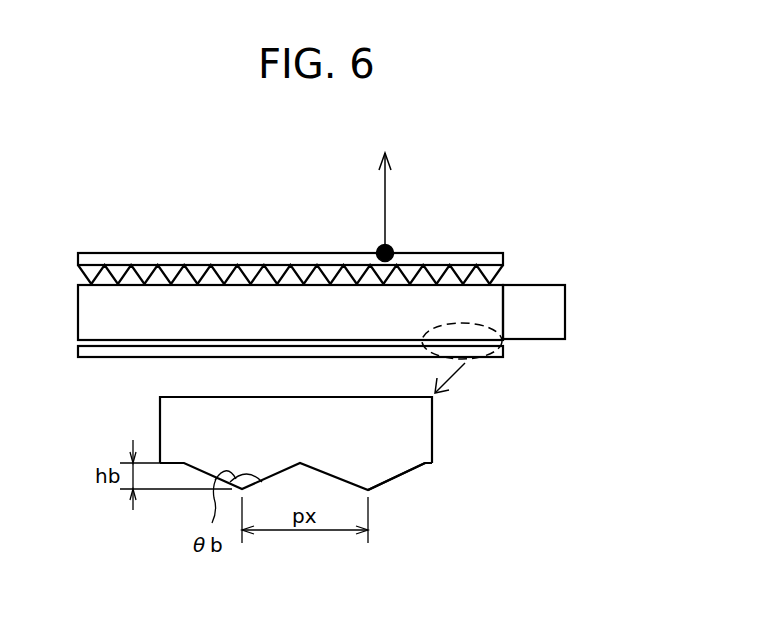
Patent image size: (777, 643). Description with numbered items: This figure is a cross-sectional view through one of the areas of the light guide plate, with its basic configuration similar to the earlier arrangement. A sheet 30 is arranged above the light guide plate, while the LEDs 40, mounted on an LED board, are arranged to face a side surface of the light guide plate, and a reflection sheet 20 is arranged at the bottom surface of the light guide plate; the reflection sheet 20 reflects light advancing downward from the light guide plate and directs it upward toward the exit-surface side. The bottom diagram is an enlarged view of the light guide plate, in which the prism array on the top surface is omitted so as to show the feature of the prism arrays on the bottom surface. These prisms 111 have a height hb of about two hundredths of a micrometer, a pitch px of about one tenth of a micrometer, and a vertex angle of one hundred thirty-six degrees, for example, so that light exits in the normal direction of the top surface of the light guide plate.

The prism sheet 30 is at (164, 252).
The reflection sheet 20 is at (112, 357).
The LED 40 is at (535, 285).
The prism 111 is at (400, 473).